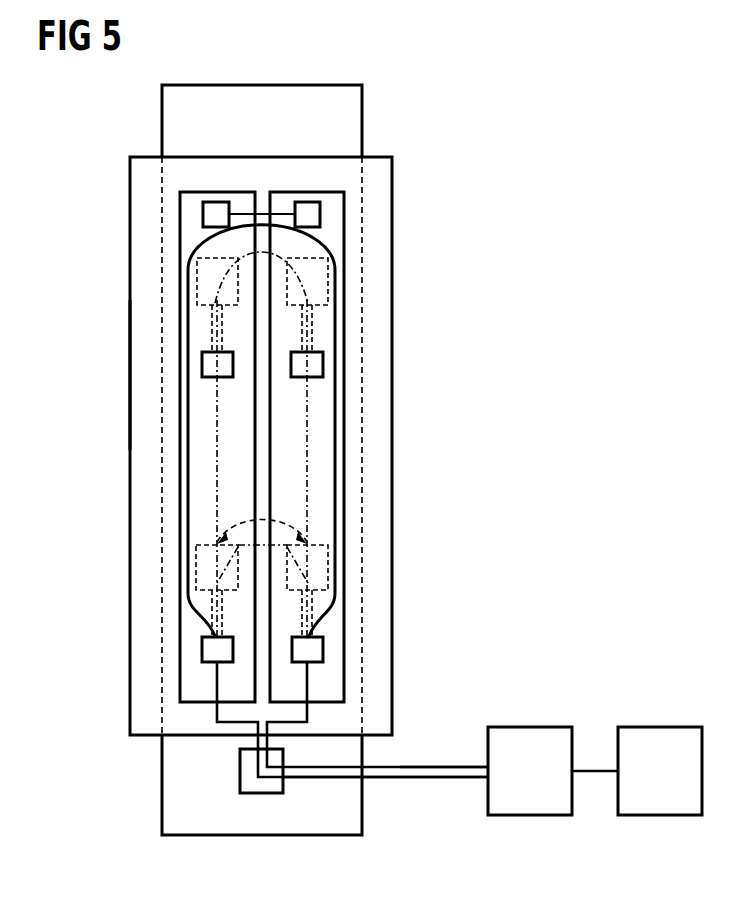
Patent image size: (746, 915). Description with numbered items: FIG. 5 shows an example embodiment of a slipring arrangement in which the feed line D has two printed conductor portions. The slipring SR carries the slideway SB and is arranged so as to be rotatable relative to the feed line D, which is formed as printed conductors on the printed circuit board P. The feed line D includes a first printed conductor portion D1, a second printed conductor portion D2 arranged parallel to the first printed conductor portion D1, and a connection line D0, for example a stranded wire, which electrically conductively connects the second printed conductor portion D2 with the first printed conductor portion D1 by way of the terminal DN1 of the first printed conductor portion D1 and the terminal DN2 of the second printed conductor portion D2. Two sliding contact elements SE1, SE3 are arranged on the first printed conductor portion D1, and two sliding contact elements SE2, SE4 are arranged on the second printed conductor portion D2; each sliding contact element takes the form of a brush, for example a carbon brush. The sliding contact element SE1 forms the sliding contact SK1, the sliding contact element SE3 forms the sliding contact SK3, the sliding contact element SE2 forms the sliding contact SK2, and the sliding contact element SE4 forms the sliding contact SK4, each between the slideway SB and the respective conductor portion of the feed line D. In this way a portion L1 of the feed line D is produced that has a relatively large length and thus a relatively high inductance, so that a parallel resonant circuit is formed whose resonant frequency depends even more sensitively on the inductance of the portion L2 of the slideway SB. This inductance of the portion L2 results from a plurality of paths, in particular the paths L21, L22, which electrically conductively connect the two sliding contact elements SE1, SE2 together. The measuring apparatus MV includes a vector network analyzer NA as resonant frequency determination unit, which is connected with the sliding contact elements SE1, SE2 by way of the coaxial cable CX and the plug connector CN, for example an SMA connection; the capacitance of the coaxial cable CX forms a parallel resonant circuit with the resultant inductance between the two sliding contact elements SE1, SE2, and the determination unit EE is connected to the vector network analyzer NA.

The feed line D is at (108, 185).
The slipring SR is at (198, 460).
The slideway SB is at (162, 123).
The printed circuit board P is at (145, 375).
The first printed conductor portion D1 is at (180, 223).
The second printed conductor portion D2 is at (344, 220).
The terminal DN1 is at (217, 202).
The terminal DN2 is at (302, 202).
The connection line D0 is at (260, 212).
The sliding contact SK1 is at (202, 565).
The sliding contact SK2 is at (322, 577).
The sliding contact SK3 is at (200, 272).
The sliding contact SK4 is at (325, 272).
The sliding contact element SE1 is at (158, 590).
The sliding contact element SE2 is at (365, 590).
The sliding contact element SE3 is at (158, 302).
The sliding contact element SE4 is at (365, 298).
The portion of the feed line L1 is at (188, 450).
The portion of the slideway L2 is at (245, 520).
The path L21 is at (302, 567).
The path L22 is at (307, 453).
The plug connector CN is at (263, 793).
The coaxial cable CX is at (327, 778).
The measuring apparatus MV is at (426, 792).
The vector network analyzer NA is at (527, 727).
The determination unit EE is at (657, 727).